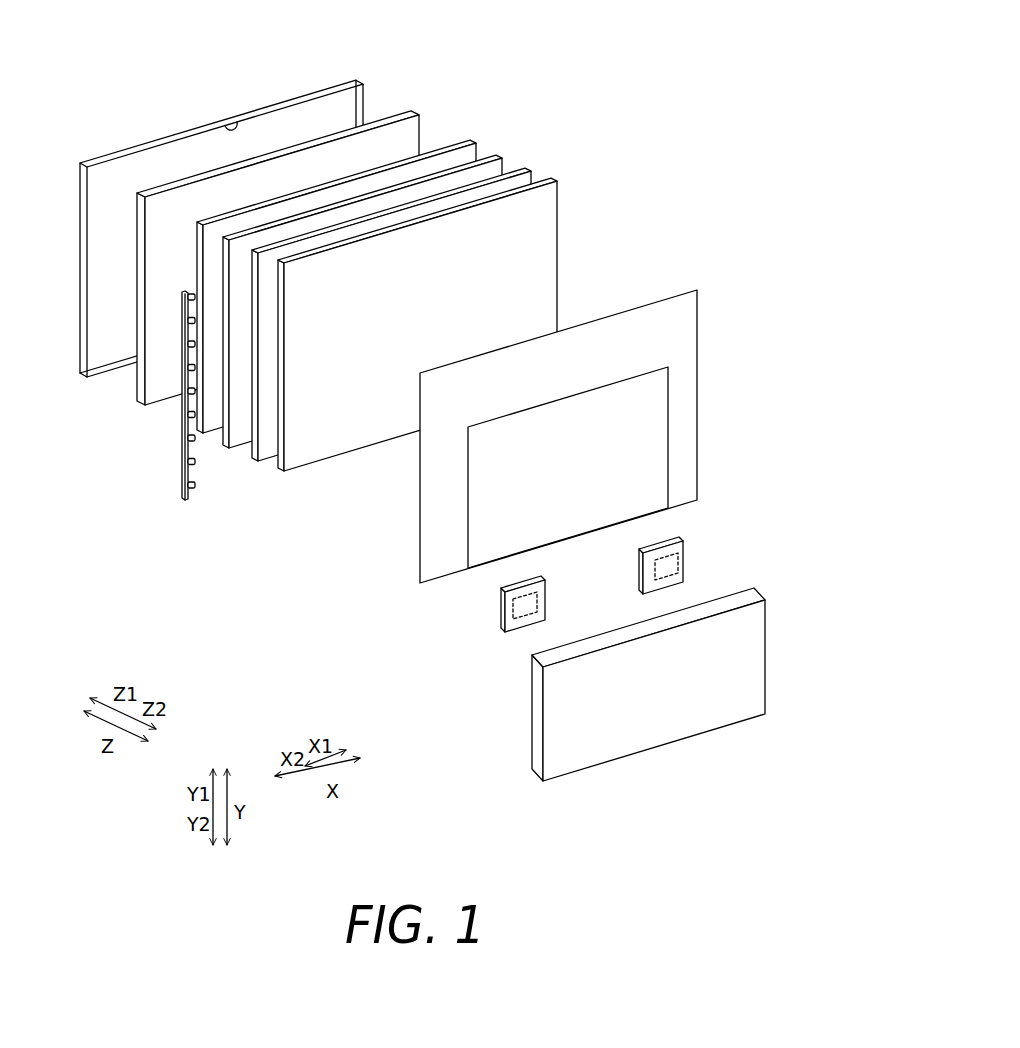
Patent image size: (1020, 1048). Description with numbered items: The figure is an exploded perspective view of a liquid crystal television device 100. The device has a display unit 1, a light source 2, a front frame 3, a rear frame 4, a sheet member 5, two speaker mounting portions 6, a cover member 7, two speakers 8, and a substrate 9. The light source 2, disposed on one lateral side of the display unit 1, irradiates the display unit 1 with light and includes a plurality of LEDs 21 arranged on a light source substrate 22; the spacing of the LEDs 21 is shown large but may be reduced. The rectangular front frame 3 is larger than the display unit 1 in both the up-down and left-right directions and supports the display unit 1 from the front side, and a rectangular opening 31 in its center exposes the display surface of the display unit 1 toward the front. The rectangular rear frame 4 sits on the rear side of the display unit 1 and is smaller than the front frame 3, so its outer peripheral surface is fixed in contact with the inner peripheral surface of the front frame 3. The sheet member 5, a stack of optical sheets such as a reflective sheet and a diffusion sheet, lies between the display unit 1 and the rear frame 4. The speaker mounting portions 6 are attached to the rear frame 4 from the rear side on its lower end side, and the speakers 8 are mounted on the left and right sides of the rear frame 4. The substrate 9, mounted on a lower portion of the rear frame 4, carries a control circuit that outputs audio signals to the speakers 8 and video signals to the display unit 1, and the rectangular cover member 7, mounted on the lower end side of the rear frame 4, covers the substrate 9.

The liquid crystal television device 100 is at (435, 398).
The display unit 1 is at (418, 125).
The light source 2 is at (156, 395).
The front frame 3 is at (249, 216).
The opening 31 is at (236, 123).
The rear frame 4 is at (585, 436).
The sheet member 5 is at (524, 147).
The speaker mounting portions 6 is at (594, 589).
The cover member 7 is at (766, 635).
The speakers 8 is at (512, 620).
The substrate 9 is at (672, 478).
The LEDs 21 is at (196, 487).
The light source substrate 22 is at (181, 448).